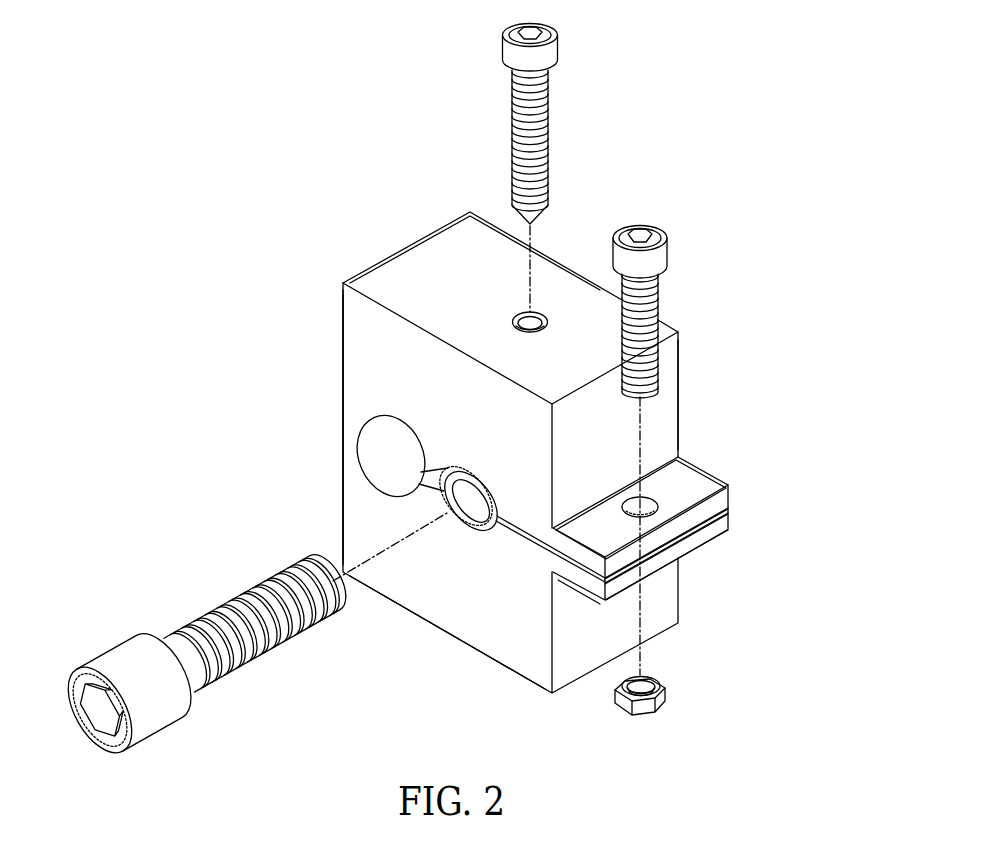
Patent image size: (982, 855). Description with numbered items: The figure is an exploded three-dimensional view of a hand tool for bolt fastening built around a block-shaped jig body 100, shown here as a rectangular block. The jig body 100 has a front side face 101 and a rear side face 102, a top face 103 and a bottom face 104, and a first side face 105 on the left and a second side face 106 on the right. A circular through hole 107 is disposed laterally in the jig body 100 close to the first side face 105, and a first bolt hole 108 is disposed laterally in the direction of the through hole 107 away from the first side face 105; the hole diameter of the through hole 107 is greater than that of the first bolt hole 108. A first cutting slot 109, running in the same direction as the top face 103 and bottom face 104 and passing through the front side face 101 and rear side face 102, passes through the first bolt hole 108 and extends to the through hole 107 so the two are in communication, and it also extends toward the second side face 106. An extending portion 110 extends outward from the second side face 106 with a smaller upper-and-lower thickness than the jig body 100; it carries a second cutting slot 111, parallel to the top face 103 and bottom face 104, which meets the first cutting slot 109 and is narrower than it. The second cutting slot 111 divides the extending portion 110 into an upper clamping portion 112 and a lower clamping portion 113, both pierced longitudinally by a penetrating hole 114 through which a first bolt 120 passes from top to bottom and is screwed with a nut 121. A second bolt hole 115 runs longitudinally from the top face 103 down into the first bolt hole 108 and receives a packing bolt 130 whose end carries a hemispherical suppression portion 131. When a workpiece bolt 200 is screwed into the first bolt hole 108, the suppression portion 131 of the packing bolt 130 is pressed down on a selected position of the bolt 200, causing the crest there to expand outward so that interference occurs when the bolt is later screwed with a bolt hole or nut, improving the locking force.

The jig body 100 is at (395, 247).
The front side face 101 is at (362, 326).
The rear side face 102 is at (681, 384).
The top face 103 is at (436, 245).
The bottom face 104 is at (517, 677).
The first side face 105 is at (342, 404).
The second side face 106 is at (681, 598).
The through hole 107 is at (377, 450).
The first bolt hole 108 is at (473, 523).
The first cutting slot 109 is at (497, 530).
The extending portion 110 is at (706, 525).
The second cutting slot 111 is at (683, 535).
The upper clamping portion 112 is at (712, 477).
The lower clamping portion 113 is at (728, 520).
The penetrating hole 114 is at (650, 502).
The second bolt hole 115 is at (537, 312).
The first bolt 120 is at (660, 305).
The nut 121 is at (656, 712).
The packing bolt 130 is at (566, 124).
The suppression portion 131 is at (535, 218).
The bolt 200 is at (250, 664).